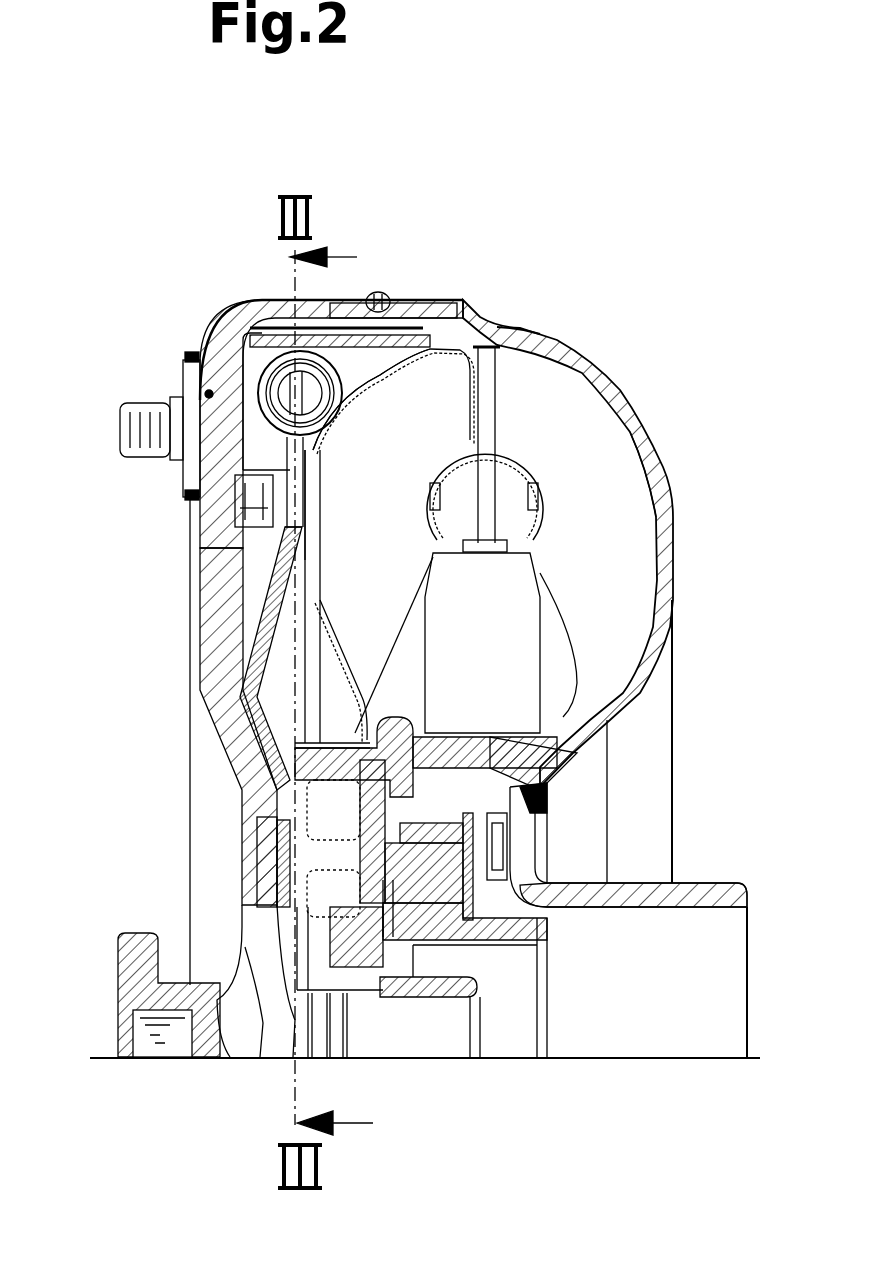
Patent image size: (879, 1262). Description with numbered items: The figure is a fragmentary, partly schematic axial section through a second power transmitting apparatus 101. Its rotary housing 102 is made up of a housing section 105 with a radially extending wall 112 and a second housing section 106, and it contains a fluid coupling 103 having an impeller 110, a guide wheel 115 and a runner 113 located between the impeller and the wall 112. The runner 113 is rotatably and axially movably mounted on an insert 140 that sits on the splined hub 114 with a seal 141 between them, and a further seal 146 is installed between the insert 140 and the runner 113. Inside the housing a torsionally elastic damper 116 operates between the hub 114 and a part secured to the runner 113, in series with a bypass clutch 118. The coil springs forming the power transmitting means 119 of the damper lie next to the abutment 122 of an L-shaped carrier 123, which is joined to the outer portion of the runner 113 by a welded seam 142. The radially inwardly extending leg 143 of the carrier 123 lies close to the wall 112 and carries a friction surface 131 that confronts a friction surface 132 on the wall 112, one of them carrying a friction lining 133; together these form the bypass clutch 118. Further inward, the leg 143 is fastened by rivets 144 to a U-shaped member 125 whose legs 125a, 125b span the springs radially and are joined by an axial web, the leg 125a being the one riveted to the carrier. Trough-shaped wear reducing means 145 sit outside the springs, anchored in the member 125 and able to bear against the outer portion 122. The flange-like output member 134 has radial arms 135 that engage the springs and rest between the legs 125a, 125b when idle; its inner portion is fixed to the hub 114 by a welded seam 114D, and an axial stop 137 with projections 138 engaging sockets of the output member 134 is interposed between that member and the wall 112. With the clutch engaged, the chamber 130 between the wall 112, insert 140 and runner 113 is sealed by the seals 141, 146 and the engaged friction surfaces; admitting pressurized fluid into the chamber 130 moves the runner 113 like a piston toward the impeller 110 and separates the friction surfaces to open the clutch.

The power transmitting apparatus 101 is at (507, 237).
The rotary housing 102 is at (578, 330).
The fluid coupling 103 is at (690, 680).
The housing section 105 is at (265, 315).
The housing section 106 is at (658, 442).
The impeller 110 is at (585, 415).
The radially extending wall 112 is at (205, 698).
The runner 113 is at (513, 324).
The hub 114 is at (417, 1020).
The welded seam 114D is at (268, 1040).
The guide wheel 115 is at (485, 652).
The torsionally elastic damper 116 is at (318, 300).
The bypass clutch 118 is at (206, 392).
The power transmitting means 119 is at (287, 322).
The abutment 122 is at (380, 242).
The carrier 123 is at (380, 298).
The member 125 is at (223, 405).
The leg 125a is at (313, 452).
The leg 125b is at (325, 400).
The chamber 130 is at (252, 597).
The friction surface 131 is at (227, 425).
The friction surface 132 is at (218, 412).
The friction lining 133 is at (152, 400).
The output member 134 is at (265, 730).
The arms 135 is at (478, 355).
The axial stop 137 is at (285, 887).
The projections 138 is at (298, 803).
The insert 140 is at (548, 947).
The seal 141 is at (355, 940).
The welded seam 142 is at (440, 335).
The radially inwardly extending leg 143 is at (228, 318).
The rivets 144 is at (252, 497).
The wear reducing means 145 is at (232, 312).
The seal 146 is at (535, 795).